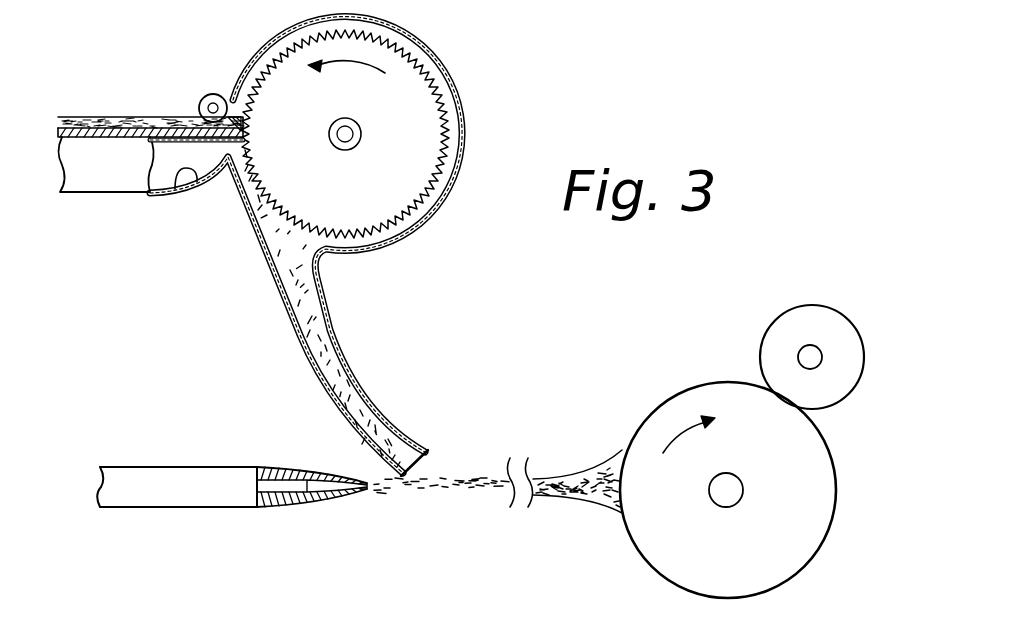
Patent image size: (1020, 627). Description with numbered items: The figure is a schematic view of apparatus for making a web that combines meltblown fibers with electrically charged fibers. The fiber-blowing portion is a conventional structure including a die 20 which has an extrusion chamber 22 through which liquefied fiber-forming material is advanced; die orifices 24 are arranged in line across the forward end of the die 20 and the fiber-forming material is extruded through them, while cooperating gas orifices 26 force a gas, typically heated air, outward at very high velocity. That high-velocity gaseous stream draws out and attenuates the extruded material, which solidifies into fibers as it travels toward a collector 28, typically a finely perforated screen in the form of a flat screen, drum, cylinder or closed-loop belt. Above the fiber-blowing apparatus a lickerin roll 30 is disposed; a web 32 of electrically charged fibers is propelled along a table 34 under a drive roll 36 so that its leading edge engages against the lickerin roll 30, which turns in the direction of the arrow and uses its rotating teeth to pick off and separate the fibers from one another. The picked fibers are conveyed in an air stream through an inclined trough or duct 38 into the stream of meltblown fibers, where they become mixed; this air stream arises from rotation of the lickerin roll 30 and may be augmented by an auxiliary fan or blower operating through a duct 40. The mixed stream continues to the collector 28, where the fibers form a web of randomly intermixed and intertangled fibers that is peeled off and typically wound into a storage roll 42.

The die 20 is at (170, 456).
The extrusion chamber 22 is at (258, 488).
The die orifices 24 is at (368, 489).
The gas orifices 26 is at (308, 468).
The collector 28 is at (657, 409).
The lickerin roll 30 is at (376, 197).
The web 32 is at (105, 116).
The table 34 is at (146, 128).
The drive roll 36 is at (214, 93).
The inclined trough or duct 38 is at (305, 313).
The duct 40 is at (172, 196).
The storage roll 42 is at (821, 306).